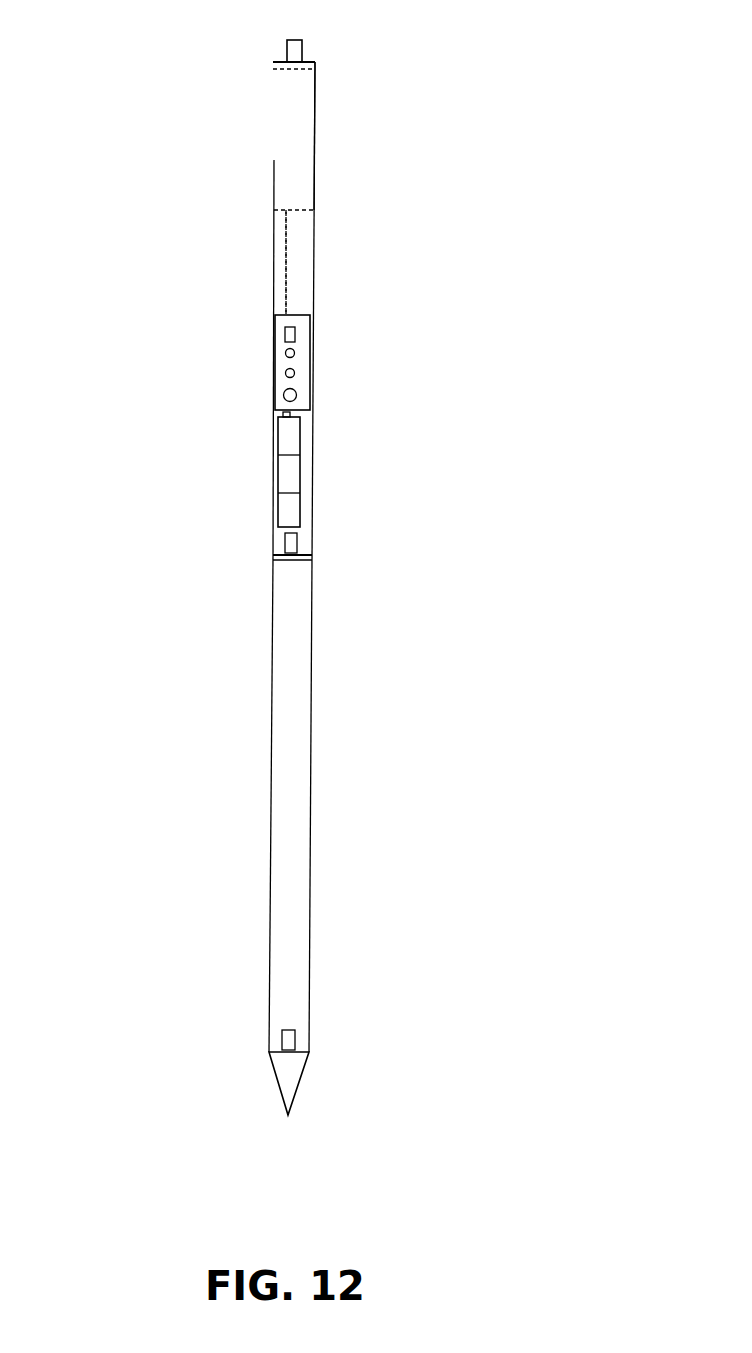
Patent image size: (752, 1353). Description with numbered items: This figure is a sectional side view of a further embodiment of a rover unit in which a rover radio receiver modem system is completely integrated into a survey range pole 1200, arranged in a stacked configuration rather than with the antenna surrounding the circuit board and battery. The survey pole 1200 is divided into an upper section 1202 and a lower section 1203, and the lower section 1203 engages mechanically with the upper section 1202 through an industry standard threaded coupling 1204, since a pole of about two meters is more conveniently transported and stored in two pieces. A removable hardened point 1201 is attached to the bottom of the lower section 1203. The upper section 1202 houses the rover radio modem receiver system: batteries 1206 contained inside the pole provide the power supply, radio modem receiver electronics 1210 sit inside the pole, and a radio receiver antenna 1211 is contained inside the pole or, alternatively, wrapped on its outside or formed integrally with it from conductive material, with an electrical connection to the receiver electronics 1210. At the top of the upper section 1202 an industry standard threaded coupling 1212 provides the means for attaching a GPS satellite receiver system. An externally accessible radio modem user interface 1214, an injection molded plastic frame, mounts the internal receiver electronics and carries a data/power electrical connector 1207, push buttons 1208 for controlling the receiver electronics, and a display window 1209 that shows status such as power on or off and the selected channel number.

The survey range pole 1200 is at (457, 81).
The removable hardened point 1201 is at (290, 1080).
The upper section 1202 is at (210, 152).
The lower section 1203 is at (291, 886).
The threaded coupling 1204 is at (295, 545).
The batteries 1206 is at (290, 440).
The data/power electrical connector 1207 is at (294, 397).
The push buttons 1208 is at (294, 353).
The display window 1209 is at (295, 334).
The radio modem receiver electronics 1210 is at (290, 258).
The radio receiver antenna 1211 is at (297, 125).
The threaded coupling 1212 is at (302, 50).
The radio modem user interface 1214 is at (274, 388).